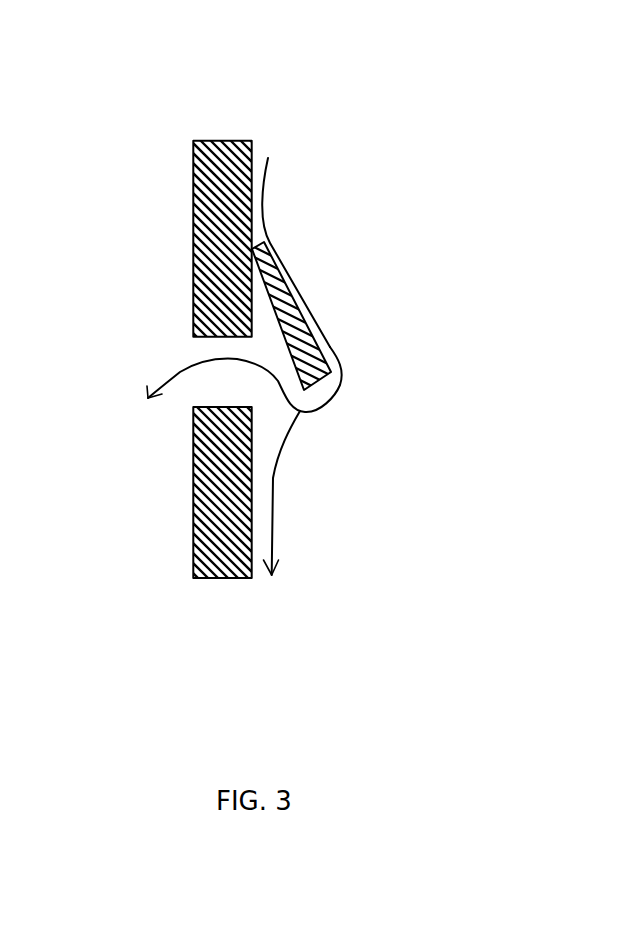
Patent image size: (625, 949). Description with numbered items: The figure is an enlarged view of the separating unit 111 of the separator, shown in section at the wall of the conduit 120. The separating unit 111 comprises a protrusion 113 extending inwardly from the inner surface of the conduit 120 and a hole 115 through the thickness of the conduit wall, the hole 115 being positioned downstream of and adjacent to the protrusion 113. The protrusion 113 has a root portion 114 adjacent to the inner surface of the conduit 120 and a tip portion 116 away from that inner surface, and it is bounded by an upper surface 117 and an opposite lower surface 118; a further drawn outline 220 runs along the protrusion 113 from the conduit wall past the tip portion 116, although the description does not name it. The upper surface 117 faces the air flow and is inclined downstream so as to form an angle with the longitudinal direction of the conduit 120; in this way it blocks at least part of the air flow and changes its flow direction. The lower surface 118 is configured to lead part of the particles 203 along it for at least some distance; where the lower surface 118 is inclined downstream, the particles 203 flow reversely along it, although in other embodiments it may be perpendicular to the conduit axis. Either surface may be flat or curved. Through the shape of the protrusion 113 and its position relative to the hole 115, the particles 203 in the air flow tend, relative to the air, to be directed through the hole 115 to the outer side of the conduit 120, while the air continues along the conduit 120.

The separating unit 111 is at (130, 75).
The protrusion 113 is at (422, 225).
The root portion 114 is at (270, 260).
The hole 115 is at (195, 353).
The tip portion 116 is at (341, 362).
The upper surface 117 is at (290, 300).
The lower surface 118 is at (268, 331).
The conduit 120 is at (212, 235).
The particles 203 is at (165, 380).
The coating layer 220 is at (268, 158).